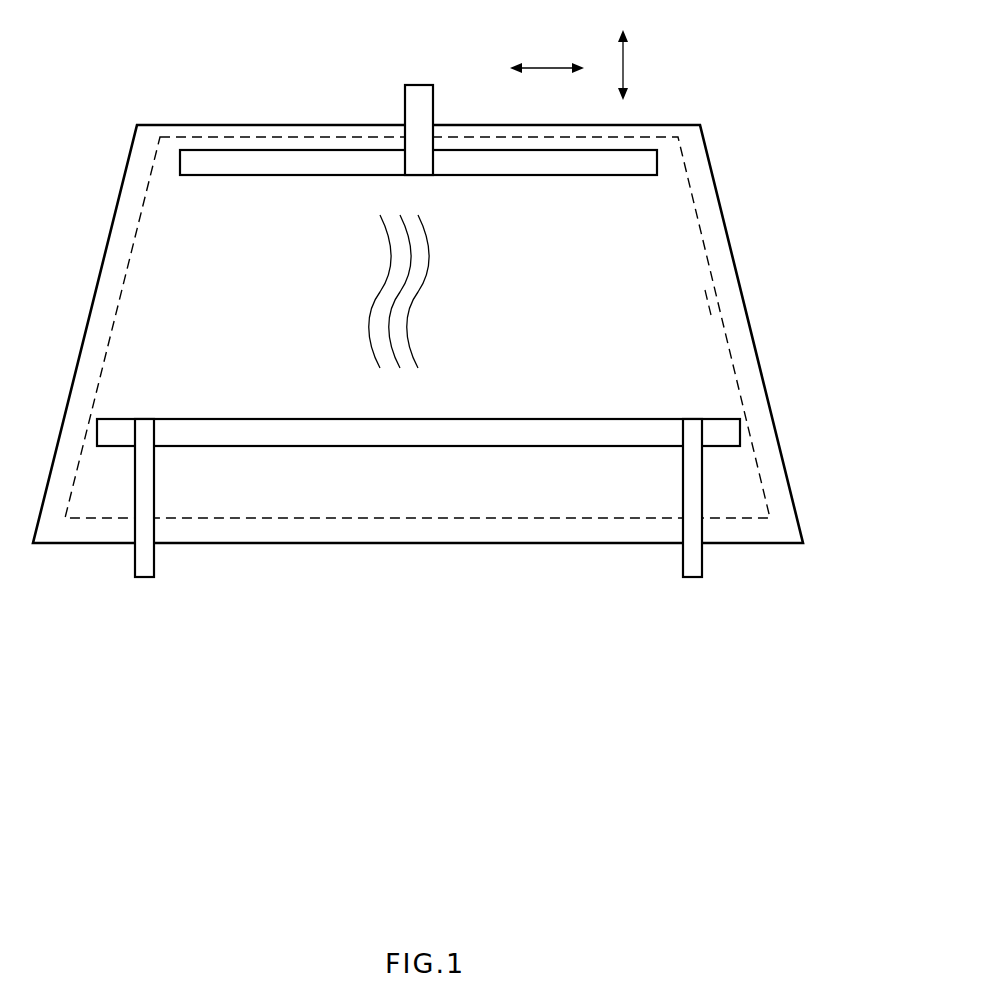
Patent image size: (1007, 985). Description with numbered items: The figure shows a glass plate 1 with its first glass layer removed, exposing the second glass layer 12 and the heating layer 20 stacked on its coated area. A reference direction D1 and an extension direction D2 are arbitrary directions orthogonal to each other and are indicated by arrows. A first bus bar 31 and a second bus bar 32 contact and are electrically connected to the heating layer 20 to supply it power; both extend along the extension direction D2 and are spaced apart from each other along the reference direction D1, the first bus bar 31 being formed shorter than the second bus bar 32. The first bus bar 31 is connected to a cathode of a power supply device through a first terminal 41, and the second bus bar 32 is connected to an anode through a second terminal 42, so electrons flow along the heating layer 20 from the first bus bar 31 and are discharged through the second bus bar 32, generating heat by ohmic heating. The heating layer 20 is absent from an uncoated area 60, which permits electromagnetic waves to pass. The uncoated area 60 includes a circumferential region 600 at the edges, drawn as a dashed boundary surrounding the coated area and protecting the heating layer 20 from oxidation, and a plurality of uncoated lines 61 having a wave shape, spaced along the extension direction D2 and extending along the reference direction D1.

The glass plate 1 is at (437, 335).
The second glass layer 12 is at (752, 336).
The heating layer 20 is at (703, 246).
The first bus bar 31 is at (657, 162).
The second bus bar 32 is at (740, 432).
The first terminal 41 is at (419, 85).
The second terminal 42 is at (690, 577).
The uncoated area 60 is at (609, 298).
The uncoated lines 61 is at (470, 291).
The circumferential region 600 is at (717, 300).
The reference direction D1 is at (623, 66).
The extension direction D2 is at (546, 67).